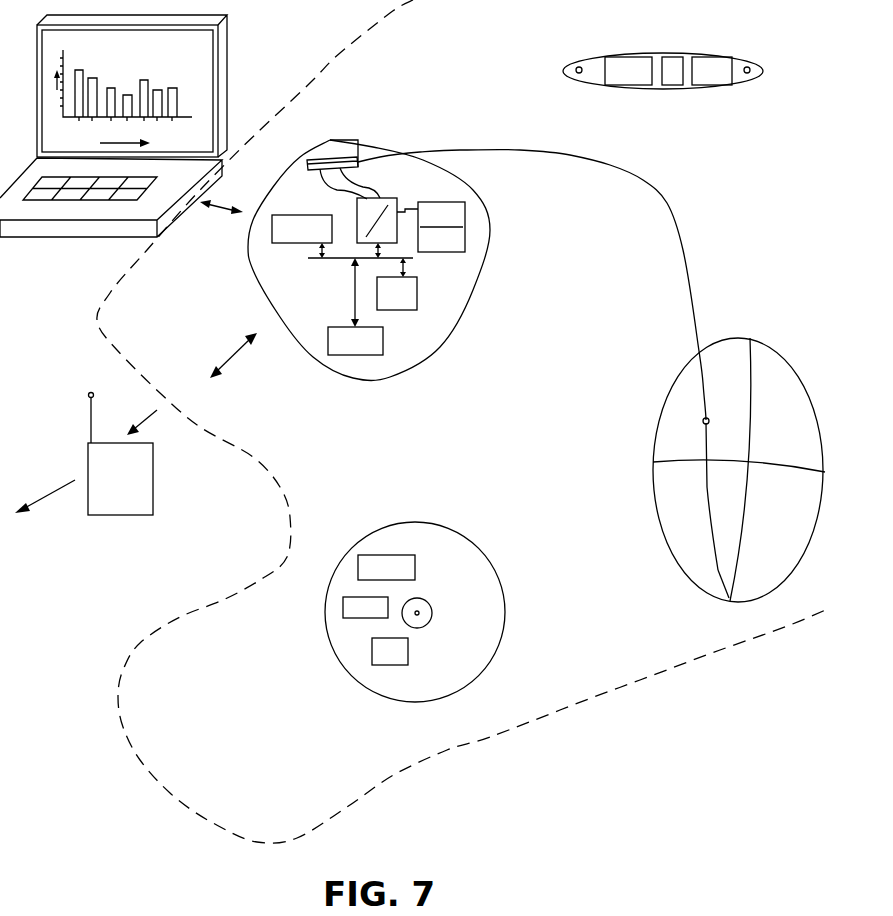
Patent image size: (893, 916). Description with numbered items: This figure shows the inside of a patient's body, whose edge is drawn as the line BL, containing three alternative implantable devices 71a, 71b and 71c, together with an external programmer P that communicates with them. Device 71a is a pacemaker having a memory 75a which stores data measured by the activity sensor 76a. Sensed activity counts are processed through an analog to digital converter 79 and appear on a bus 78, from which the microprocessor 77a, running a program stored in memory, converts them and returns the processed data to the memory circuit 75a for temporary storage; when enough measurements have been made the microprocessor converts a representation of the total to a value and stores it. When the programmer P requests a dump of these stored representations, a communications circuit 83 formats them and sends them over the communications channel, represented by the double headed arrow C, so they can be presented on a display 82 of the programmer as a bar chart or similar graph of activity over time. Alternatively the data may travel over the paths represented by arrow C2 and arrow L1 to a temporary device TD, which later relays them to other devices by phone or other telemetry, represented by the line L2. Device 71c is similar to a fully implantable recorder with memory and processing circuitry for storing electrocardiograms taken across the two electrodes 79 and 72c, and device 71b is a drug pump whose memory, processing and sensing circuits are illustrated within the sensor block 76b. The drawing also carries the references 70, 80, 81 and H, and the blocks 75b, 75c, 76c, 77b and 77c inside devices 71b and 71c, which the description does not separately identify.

The monitoring system 70 is at (377, 446).
The pacemaker 71a is at (415, 210).
The drug pump 71b is at (418, 623).
The implantable device 71c is at (683, 75).
The electrode 72c is at (750, 67).
The memory 75a is at (283, 243).
The memory 75b is at (343, 611).
The memory 75c is at (713, 85).
The sensor 76a is at (466, 207).
The sensor block 76b is at (358, 571).
The sensor 76c is at (628, 85).
The microprocessor 77a is at (417, 294).
The processor 77b is at (373, 663).
The processor 77c is at (670, 85).
The bus 78 is at (343, 259).
The analog to digital converter 79 is at (403, 184).
The lead 80 is at (462, 150).
The electrode 81 is at (704, 424).
The display 82 is at (153, 63).
The communications circuit 83 is at (367, 355).
The head of patient H is at (672, 553).
The programmer P is at (85, 231).
The communications channel C is at (217, 212).
The communications arrow C2 is at (233, 357).
The communications arrow L1 is at (150, 430).
The telemetry line L2 is at (45, 508).
The temporary device TD is at (120, 454).
The body line BL is at (318, 80).